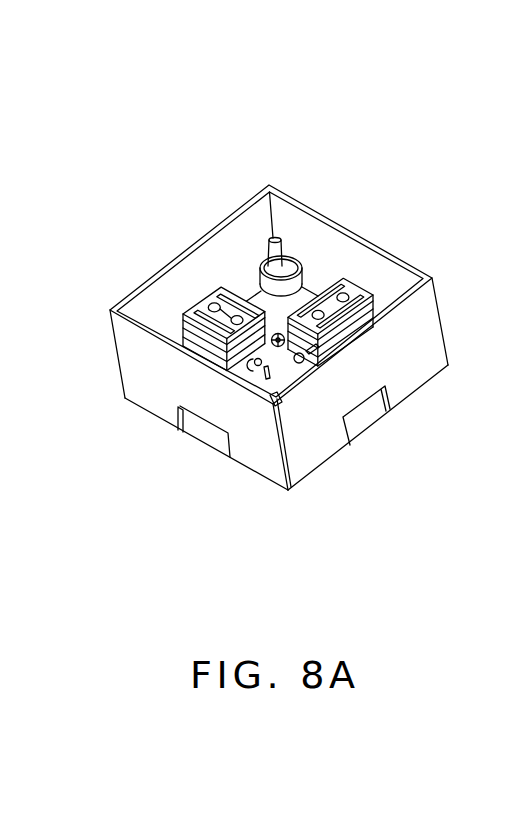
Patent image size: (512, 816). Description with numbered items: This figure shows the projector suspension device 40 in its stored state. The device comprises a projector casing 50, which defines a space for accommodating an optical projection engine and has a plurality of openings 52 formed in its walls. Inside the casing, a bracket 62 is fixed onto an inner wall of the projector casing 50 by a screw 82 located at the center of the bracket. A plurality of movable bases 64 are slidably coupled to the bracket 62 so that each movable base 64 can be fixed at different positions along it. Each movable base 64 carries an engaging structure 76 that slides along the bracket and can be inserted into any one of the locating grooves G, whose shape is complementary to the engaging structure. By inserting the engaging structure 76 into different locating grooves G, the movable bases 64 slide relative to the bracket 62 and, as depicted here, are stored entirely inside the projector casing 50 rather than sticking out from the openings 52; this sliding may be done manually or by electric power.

The projector suspension device 40 is at (96, 84).
The projector casing 50 is at (188, 248).
The openings 52 is at (386, 412).
The bracket 62 is at (356, 275).
The movable base 64 is at (206, 428).
The engaging structure 76 is at (237, 325).
The screw 82 is at (279, 347).
The locating grooves G is at (222, 306).